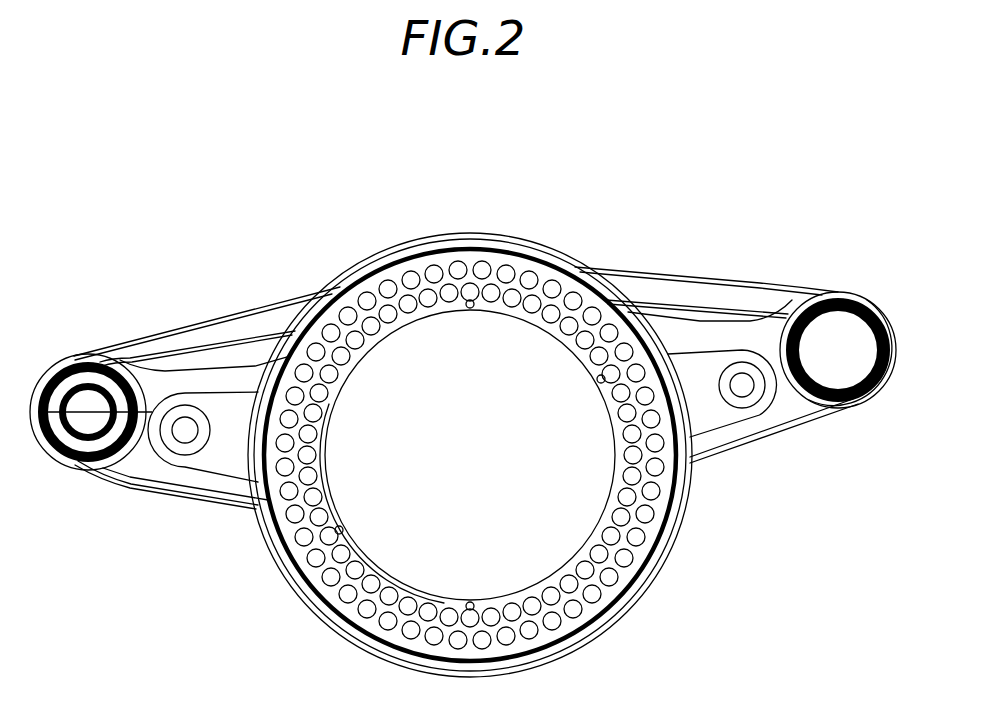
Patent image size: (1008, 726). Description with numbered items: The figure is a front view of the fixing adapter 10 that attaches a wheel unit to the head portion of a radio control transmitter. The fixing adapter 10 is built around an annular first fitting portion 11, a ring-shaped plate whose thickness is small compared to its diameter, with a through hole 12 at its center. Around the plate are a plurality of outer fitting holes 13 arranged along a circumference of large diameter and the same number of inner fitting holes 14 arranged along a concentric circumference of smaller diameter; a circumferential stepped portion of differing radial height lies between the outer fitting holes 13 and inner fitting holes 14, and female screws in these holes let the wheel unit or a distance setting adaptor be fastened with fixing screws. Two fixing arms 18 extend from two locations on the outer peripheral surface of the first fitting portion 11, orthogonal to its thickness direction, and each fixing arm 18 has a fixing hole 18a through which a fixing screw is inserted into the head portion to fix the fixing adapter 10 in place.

The fixing adapter 10 is at (636, 178).
The first fitting portion 11 is at (483, 232).
The through hole 12 is at (447, 425).
The outer fitting holes 13 is at (630, 557).
The inner fitting holes 14 is at (578, 542).
The fixing arms 18 is at (152, 334).
The fixing hole 18a is at (185, 432).